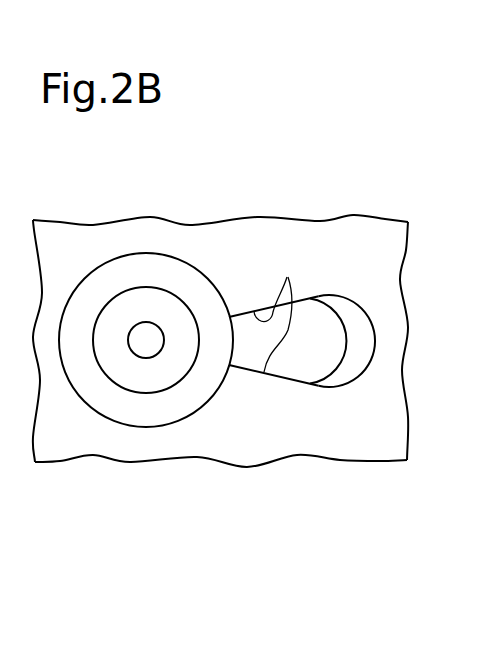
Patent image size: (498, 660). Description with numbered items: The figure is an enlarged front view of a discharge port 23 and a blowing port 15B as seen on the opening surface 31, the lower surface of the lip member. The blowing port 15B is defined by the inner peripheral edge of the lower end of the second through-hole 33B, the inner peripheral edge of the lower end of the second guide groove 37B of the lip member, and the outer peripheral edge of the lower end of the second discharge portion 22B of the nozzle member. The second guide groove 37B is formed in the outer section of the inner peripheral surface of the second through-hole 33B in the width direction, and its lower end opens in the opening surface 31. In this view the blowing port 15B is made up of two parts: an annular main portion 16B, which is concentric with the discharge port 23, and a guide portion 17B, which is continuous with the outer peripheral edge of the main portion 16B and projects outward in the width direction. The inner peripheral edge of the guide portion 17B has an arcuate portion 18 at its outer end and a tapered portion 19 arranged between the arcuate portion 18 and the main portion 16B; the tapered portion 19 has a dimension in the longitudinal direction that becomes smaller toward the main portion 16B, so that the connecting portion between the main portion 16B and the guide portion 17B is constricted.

The opening surface 31 is at (310, 232).
The blowing port 15B is at (202, 415).
The annular main portion 16B is at (177, 409).
The guide portion 17B is at (313, 361).
The second discharge portion 22B is at (136, 302).
The discharge port 23 is at (154, 329).
The tapered portion 19 is at (278, 311).
The arcuate portion 18 is at (373, 356).
The second guide groove 37B is at (350, 310).
The second through-hole 33B is at (135, 427).